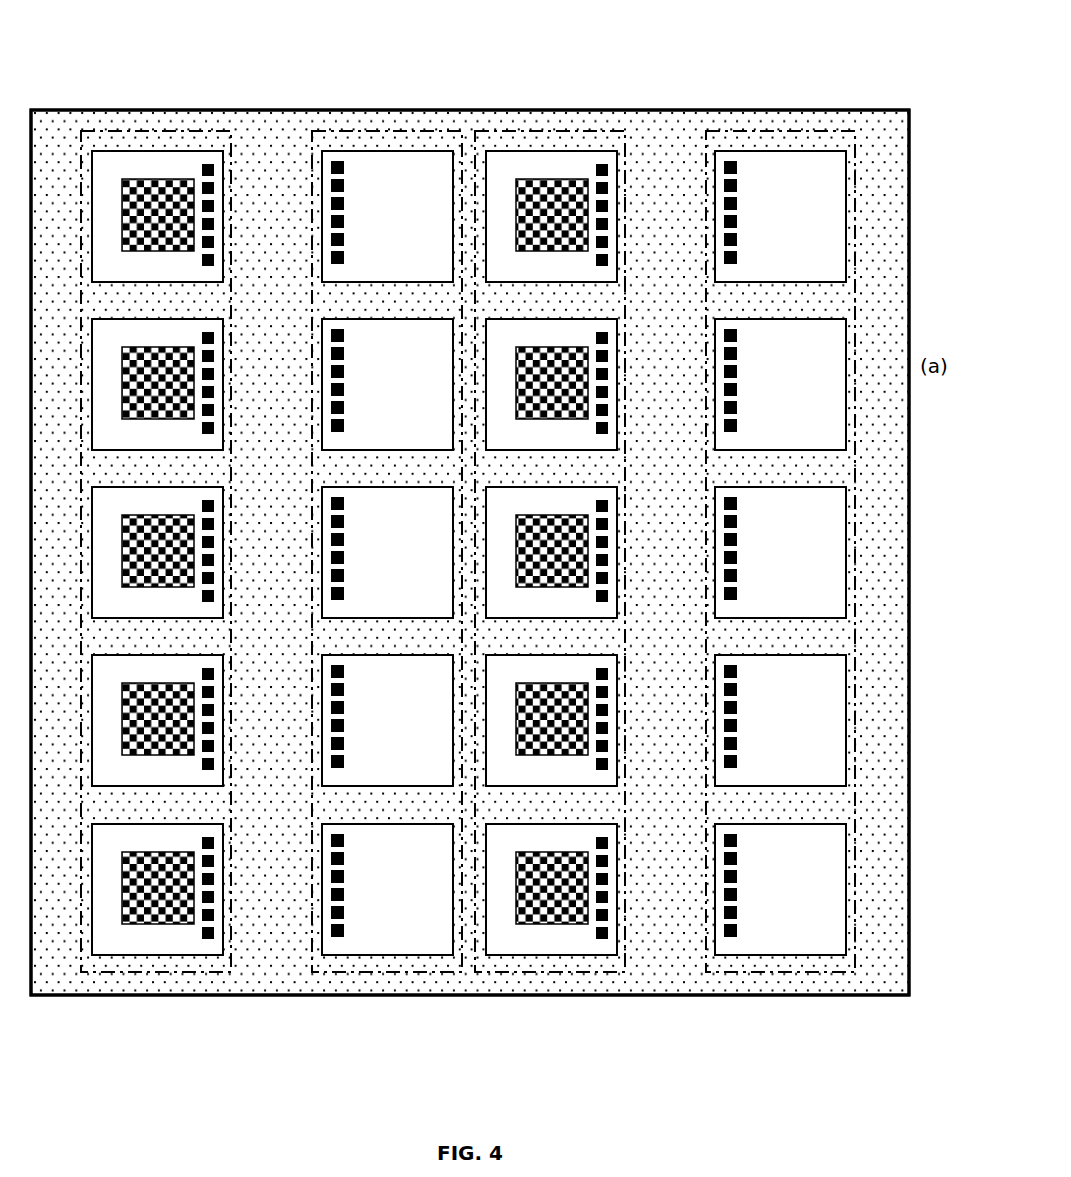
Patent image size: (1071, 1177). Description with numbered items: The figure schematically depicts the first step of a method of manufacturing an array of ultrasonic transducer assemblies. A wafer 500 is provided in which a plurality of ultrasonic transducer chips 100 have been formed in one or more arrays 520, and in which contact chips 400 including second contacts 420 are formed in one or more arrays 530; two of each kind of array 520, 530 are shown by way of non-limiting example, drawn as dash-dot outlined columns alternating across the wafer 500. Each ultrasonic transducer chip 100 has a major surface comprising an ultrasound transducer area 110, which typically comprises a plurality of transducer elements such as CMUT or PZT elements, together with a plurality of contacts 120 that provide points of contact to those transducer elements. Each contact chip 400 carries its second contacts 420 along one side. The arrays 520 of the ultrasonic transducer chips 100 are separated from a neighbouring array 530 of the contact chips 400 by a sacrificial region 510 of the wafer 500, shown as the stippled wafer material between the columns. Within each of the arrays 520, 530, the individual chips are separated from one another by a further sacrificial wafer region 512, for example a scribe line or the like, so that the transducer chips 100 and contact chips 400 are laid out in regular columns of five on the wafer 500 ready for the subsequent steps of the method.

The ultrasonic transducer chip 100 is at (102, 953).
The ultrasound transducer area 110 is at (158, 928).
The contacts 120 is at (213, 940).
The contact chip 400 is at (438, 953).
The second contacts 420 is at (340, 937).
The wafer 500 is at (470, 564).
The sacrificial region 510 is at (275, 965).
The further sacrificial wafer region 512 is at (108, 298).
The array of ultrasonic transducer chips 520 is at (165, 130).
The array of contact chips 530 is at (385, 128).